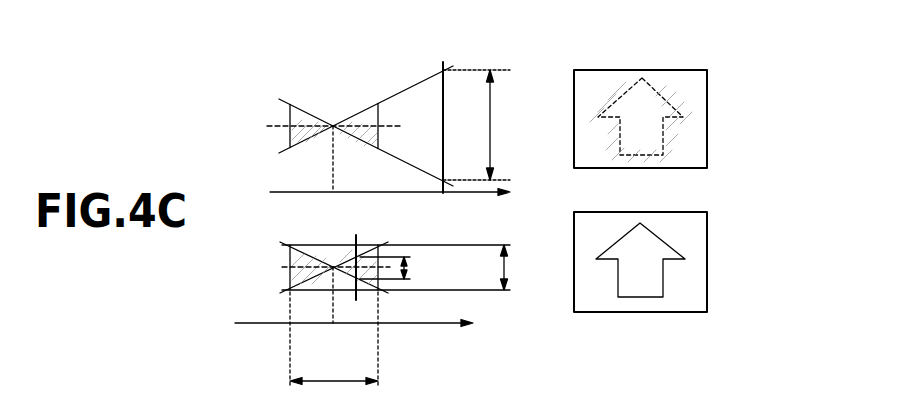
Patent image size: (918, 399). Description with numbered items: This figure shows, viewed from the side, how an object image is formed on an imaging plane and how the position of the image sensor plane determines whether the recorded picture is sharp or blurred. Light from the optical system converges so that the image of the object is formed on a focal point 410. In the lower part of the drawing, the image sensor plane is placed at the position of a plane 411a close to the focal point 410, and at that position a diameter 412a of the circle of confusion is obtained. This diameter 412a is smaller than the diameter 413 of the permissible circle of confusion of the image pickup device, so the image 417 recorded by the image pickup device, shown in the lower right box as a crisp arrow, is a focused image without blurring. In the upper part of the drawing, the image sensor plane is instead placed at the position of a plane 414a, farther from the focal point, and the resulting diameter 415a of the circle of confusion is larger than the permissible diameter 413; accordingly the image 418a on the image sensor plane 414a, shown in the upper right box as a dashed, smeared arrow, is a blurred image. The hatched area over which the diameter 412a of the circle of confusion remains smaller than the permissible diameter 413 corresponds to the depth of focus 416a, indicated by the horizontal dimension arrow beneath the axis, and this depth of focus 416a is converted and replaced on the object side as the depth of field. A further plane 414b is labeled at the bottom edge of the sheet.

The focal point 410 is at (333, 265).
The plane 411a is at (357, 240).
The diameter of circle of confusion 412a is at (410, 268).
The diameter of permissible circle of confusion 413 is at (507, 268).
The plane 414a is at (443, 62).
The image plane 414b is at (494, 394).
The diameter of circle of confusion 415a is at (530, 115).
The depth of focus 416a is at (332, 380).
The image 417 is at (660, 240).
The image 418a is at (655, 96).